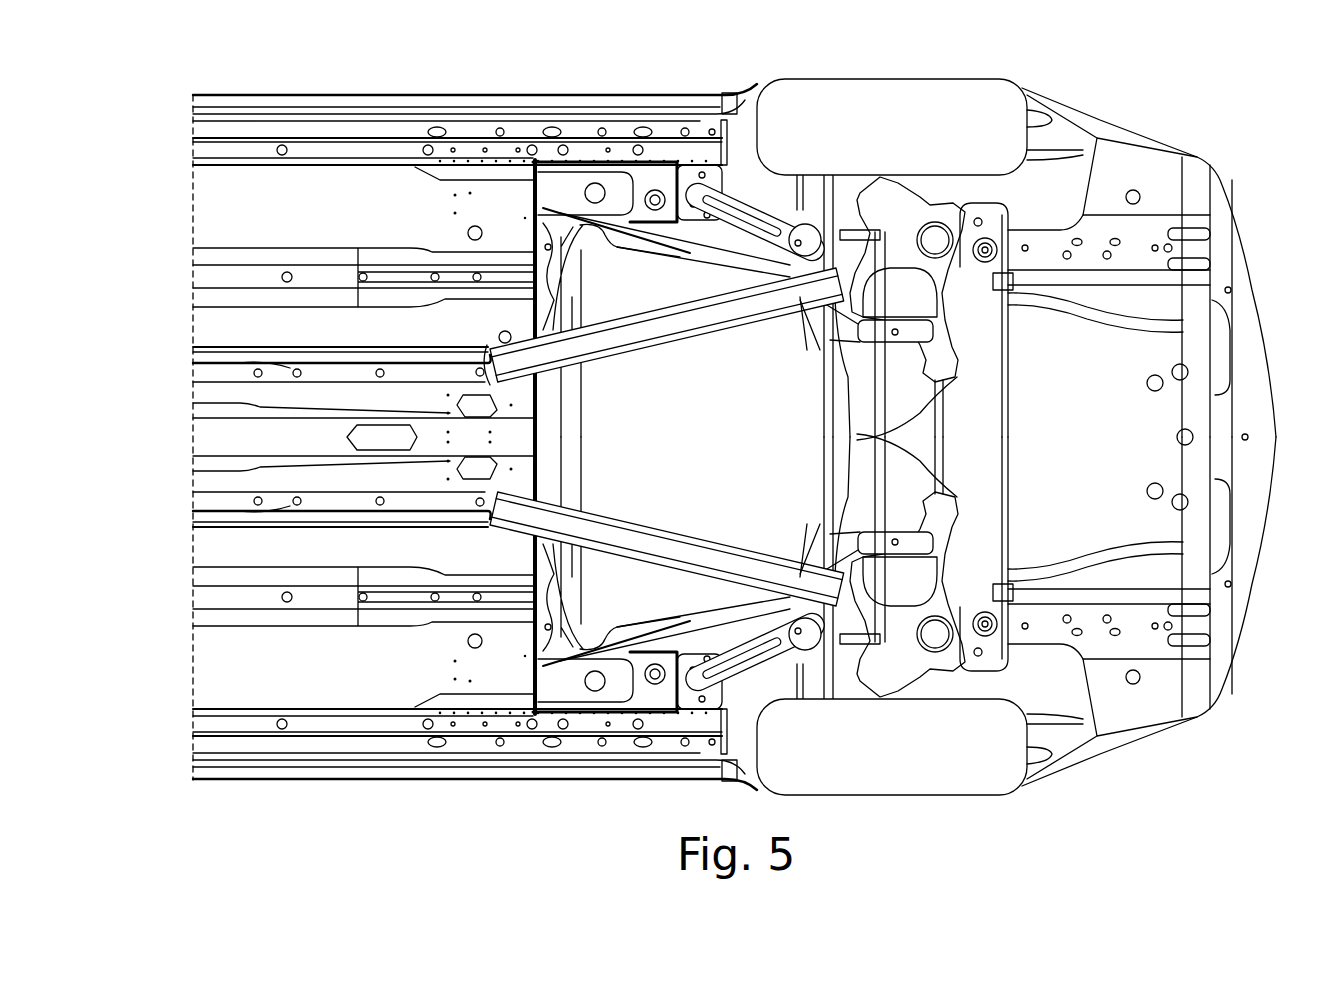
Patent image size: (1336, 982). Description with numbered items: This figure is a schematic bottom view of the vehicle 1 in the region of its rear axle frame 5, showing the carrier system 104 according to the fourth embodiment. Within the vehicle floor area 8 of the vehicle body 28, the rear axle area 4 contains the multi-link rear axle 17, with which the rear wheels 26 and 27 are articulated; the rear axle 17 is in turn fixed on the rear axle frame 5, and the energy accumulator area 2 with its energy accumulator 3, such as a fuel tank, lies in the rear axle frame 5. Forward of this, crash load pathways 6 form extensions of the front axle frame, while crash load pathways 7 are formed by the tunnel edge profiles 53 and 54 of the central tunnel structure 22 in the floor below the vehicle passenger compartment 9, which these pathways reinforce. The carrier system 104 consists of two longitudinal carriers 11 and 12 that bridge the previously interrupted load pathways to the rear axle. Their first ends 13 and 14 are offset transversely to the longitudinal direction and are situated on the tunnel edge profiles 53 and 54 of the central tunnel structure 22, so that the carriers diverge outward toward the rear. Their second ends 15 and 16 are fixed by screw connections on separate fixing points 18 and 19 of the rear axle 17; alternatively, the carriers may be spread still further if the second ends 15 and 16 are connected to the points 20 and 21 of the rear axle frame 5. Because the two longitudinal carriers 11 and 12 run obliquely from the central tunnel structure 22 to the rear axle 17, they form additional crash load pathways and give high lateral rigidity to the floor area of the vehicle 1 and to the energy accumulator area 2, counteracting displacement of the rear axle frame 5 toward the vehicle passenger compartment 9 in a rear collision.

The vehicle 1 is at (1243, 124).
The energy accumulator area 2 is at (677, 447).
The energy accumulator 3 is at (784, 462).
The rear axle area 4 is at (915, 488).
The rear axle frame 5 is at (660, 177).
The crash load pathways 6 is at (215, 277).
The crash load pathways 7 is at (205, 347).
The vehicle floor area 8 is at (308, 183).
The vehicle passenger compartment 9 is at (228, 193).
The longitudinal carrier 11 is at (603, 337).
The longitudinal carrier 12 is at (620, 543).
The first end 13 is at (515, 362).
The first end 14 is at (530, 600).
The second end 15 is at (768, 300).
The second end 16 is at (800, 590).
The rear axle 17 is at (972, 385).
The fixing point 18 is at (787, 292).
The fixing point 19 is at (805, 560).
The point of the rear axle frame 20 is at (750, 213).
The point of the rear axle frame 21 is at (733, 670).
The central tunnel structure 22 is at (225, 432).
The rear wheel 26 is at (963, 110).
The rear wheel 27 is at (915, 773).
The vehicle body 28 is at (215, 128).
The tunnel edge profile 53 is at (276, 362).
The tunnel edge profile 54 is at (258, 502).
The carrier system 104 is at (595, 312).